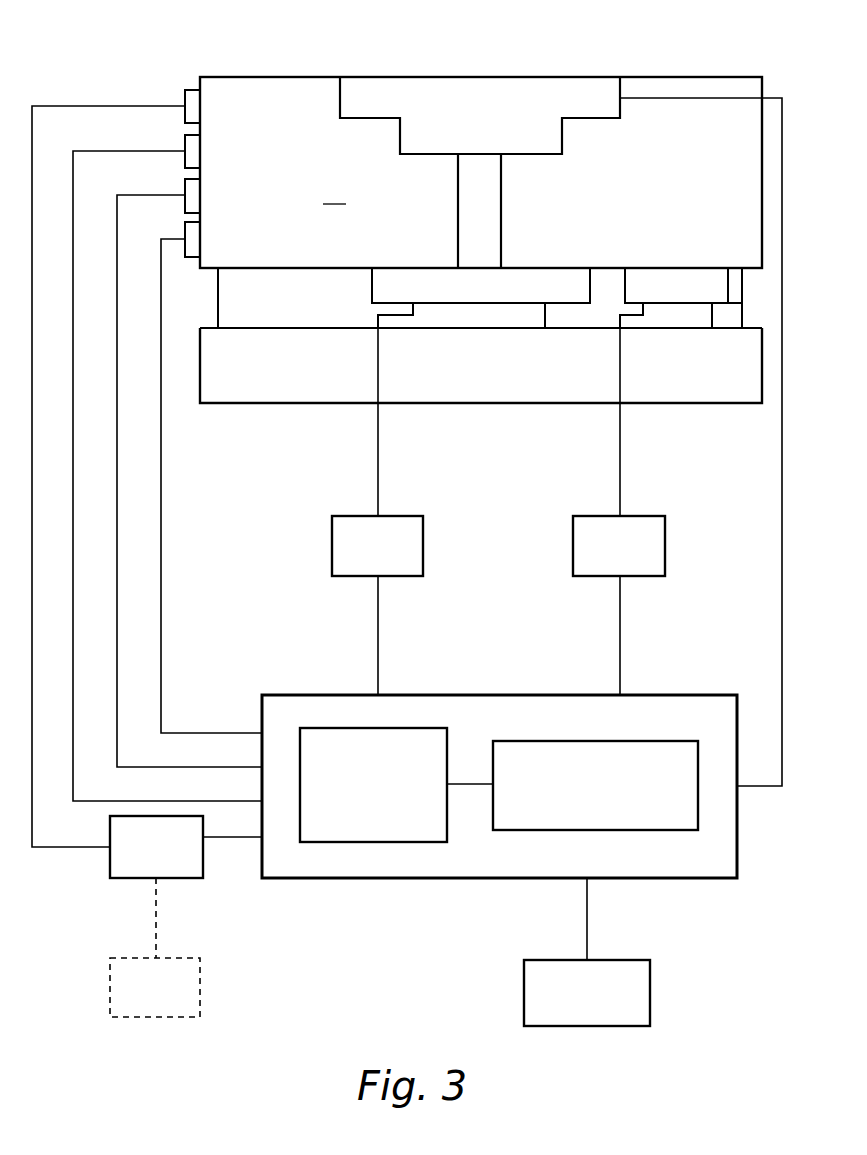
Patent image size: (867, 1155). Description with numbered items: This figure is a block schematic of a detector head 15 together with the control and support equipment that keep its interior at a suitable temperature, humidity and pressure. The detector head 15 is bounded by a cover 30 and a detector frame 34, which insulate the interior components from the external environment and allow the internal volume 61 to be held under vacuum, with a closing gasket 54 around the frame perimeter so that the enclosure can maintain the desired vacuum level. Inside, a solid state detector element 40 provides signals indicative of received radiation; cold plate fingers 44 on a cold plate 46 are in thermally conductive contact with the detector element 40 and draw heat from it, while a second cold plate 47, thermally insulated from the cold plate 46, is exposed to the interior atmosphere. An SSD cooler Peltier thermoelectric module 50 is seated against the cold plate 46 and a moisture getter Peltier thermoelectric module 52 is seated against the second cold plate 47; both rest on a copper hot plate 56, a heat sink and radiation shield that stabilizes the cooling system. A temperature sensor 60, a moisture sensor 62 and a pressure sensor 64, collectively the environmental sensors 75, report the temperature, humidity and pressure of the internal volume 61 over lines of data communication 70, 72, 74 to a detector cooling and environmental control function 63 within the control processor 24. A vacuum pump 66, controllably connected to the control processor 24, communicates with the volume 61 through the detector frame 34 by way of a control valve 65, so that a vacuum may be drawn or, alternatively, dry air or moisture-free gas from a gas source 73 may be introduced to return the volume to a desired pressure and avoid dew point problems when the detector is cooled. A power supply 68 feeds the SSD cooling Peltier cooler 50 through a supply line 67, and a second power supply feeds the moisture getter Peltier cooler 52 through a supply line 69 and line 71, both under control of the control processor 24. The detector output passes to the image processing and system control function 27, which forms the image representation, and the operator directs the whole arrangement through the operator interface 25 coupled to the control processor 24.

The detector head 15 is at (677, 52).
The control processor 24 is at (353, 880).
The operator interface 25 is at (650, 993).
The image processing and system control function 27 is at (600, 831).
The cover 30 is at (258, 77).
The detector frame 34 is at (763, 88).
The solid state detector element 40 is at (489, 85).
The cold plate fingers 44 is at (494, 220).
The cold plate 46 is at (424, 276).
The second cold plate 47 is at (677, 274).
The SSD cooler Peltier thermoelectric module 50 is at (490, 330).
The moisture getter Peltier thermoelectric module 52 is at (678, 323).
The closing gasket 54 is at (212, 296).
The hot plate 56 is at (267, 405).
The temperature sensor 60 is at (185, 190).
The internal volume 61 is at (334, 193).
The moisture sensor 62 is at (200, 240).
The detector cooling and environmental control function 63 is at (383, 843).
The pressure sensor 64 is at (200, 150).
The control valve 65 is at (185, 93).
The vacuum pump 66 is at (110, 866).
The supply line 67 is at (380, 437).
The power supply 68 is at (332, 546).
The supply line 69 is at (665, 546).
The line of data communication 70 is at (117, 333).
The power line 71 is at (622, 443).
The line of data communication 72 is at (163, 533).
The gas source 73 is at (110, 988).
The line of data communication 74 is at (103, 800).
The environmental sensors 75 is at (260, 174).